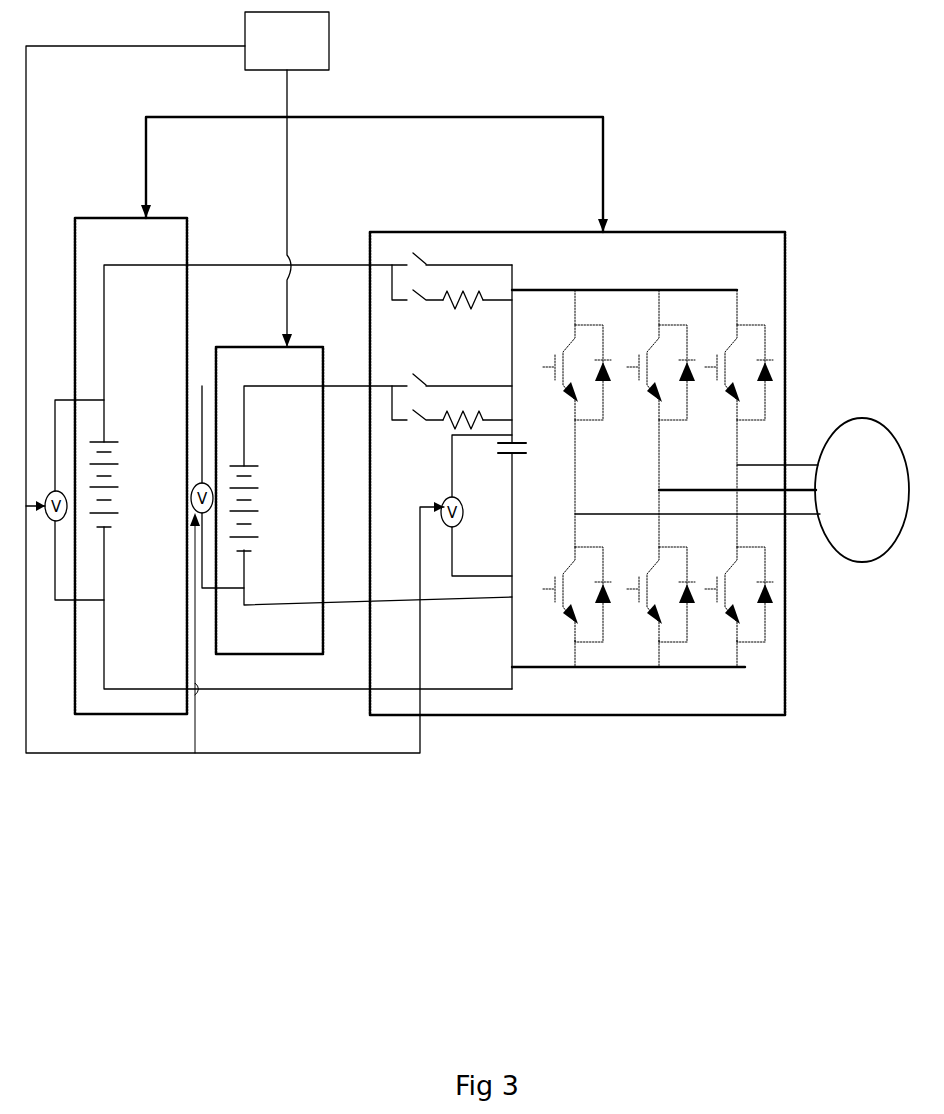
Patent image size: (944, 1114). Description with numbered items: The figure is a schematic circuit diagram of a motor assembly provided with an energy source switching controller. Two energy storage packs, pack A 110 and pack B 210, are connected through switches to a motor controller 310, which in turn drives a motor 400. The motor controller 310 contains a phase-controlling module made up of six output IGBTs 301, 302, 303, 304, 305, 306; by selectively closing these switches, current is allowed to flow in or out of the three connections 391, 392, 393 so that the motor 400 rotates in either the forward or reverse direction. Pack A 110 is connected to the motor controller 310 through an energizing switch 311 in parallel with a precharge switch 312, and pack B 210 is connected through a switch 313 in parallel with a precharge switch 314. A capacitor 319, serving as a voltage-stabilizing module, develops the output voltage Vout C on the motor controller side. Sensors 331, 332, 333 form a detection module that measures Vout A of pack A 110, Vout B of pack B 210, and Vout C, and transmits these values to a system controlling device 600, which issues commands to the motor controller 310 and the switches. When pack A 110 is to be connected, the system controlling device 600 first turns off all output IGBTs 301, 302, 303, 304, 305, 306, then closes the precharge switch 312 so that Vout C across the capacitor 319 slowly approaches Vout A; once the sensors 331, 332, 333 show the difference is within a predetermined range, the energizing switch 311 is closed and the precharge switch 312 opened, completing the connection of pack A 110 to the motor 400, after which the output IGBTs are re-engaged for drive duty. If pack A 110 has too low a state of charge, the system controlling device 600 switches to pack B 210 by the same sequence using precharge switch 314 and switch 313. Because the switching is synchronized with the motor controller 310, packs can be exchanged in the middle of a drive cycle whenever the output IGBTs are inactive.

The system controlling device 600 is at (330, 47).
The energy pack A 110 is at (132, 222).
The energy pack B 210 is at (283, 343).
The motor controller 310 is at (563, 235).
The energizing switch 311 is at (415, 253).
The precharge switch 312 is at (420, 306).
The switch 313 is at (428, 374).
The precharge switch 314 is at (429, 423).
The capacitor 319 is at (506, 461).
The sensor 331 is at (51, 522).
The sensor 332 is at (192, 494).
The sensor 333 is at (459, 517).
The output IGBT 301 is at (568, 393).
The output IGBT 302 is at (654, 393).
The output IGBT 303 is at (732, 393).
The output IGBT 304 is at (571, 606).
The output IGBT 305 is at (657, 606).
The output IGBT 306 is at (735, 606).
The connection 391 is at (777, 465).
The connection 392 is at (737, 490).
The connection 393 is at (697, 514).
The motor 400 is at (877, 413).